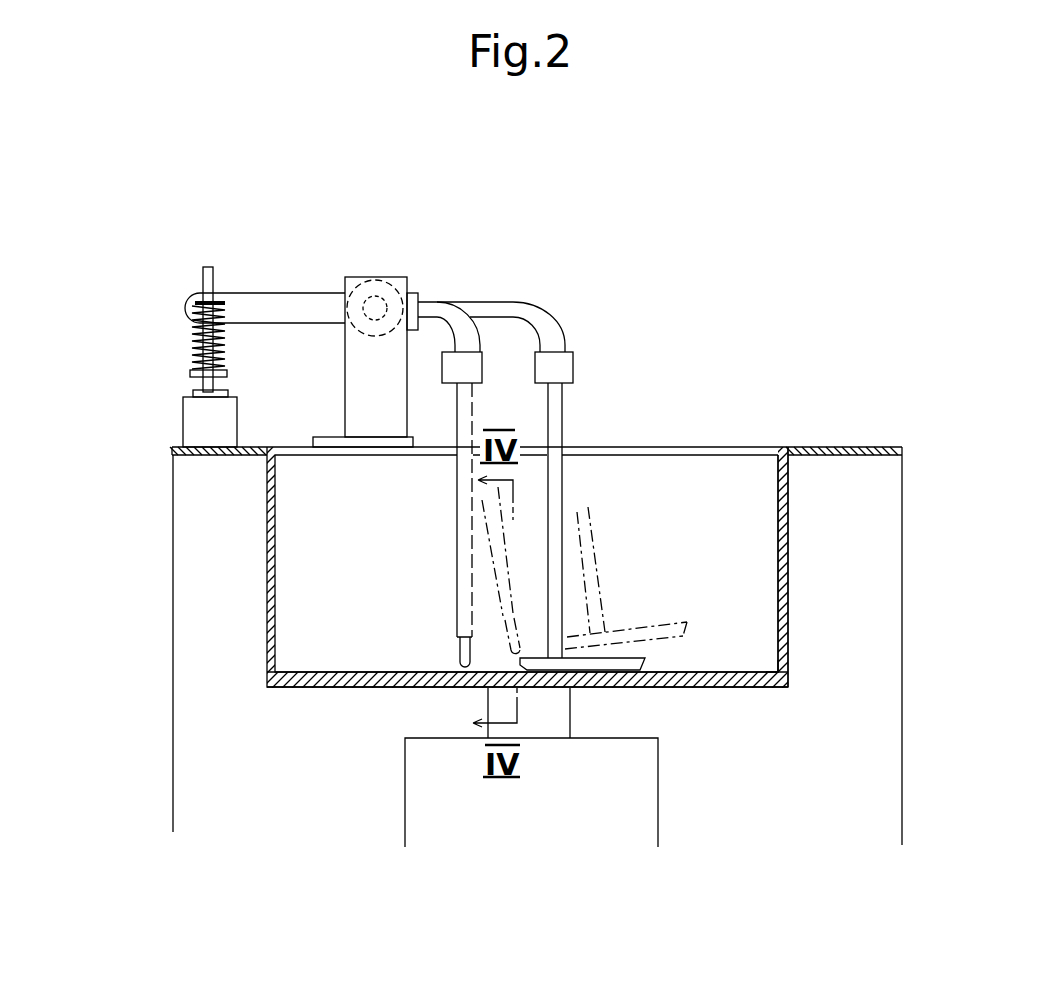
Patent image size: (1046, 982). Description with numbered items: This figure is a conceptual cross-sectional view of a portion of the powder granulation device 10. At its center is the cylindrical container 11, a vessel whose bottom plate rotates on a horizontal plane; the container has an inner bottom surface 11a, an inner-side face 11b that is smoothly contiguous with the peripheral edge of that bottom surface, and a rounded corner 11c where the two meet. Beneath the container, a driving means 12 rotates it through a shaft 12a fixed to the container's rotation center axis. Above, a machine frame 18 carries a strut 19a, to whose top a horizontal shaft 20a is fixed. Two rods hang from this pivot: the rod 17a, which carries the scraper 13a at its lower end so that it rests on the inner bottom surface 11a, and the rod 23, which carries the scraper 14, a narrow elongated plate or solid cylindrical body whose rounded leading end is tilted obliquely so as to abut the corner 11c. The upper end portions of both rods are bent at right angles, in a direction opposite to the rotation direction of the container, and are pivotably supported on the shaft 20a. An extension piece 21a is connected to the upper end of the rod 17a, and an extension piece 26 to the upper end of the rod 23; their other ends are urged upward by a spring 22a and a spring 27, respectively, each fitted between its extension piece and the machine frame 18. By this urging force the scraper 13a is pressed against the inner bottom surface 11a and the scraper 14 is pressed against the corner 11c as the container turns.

The powder granulation device 10 is at (678, 327).
The cylindrical container 11 is at (255, 562).
The inner bottom surface 11a is at (343, 668).
The inner-side face 11b is at (772, 562).
The corner 11c is at (778, 668).
The driving means 12 is at (428, 785).
The shaft 12a is at (553, 713).
The scraper 13a is at (593, 662).
The scraper 14 is at (463, 660).
The rod 17a is at (552, 450).
The machine frame 18 is at (175, 458).
The strut 19a is at (360, 380).
The shaft 20a is at (400, 285).
The extension piece 21a is at (265, 270).
The extension piece 26 is at (273, 308).
The spring 22a is at (157, 357).
The spring 27 is at (197, 350).
The rod 23 is at (463, 528).